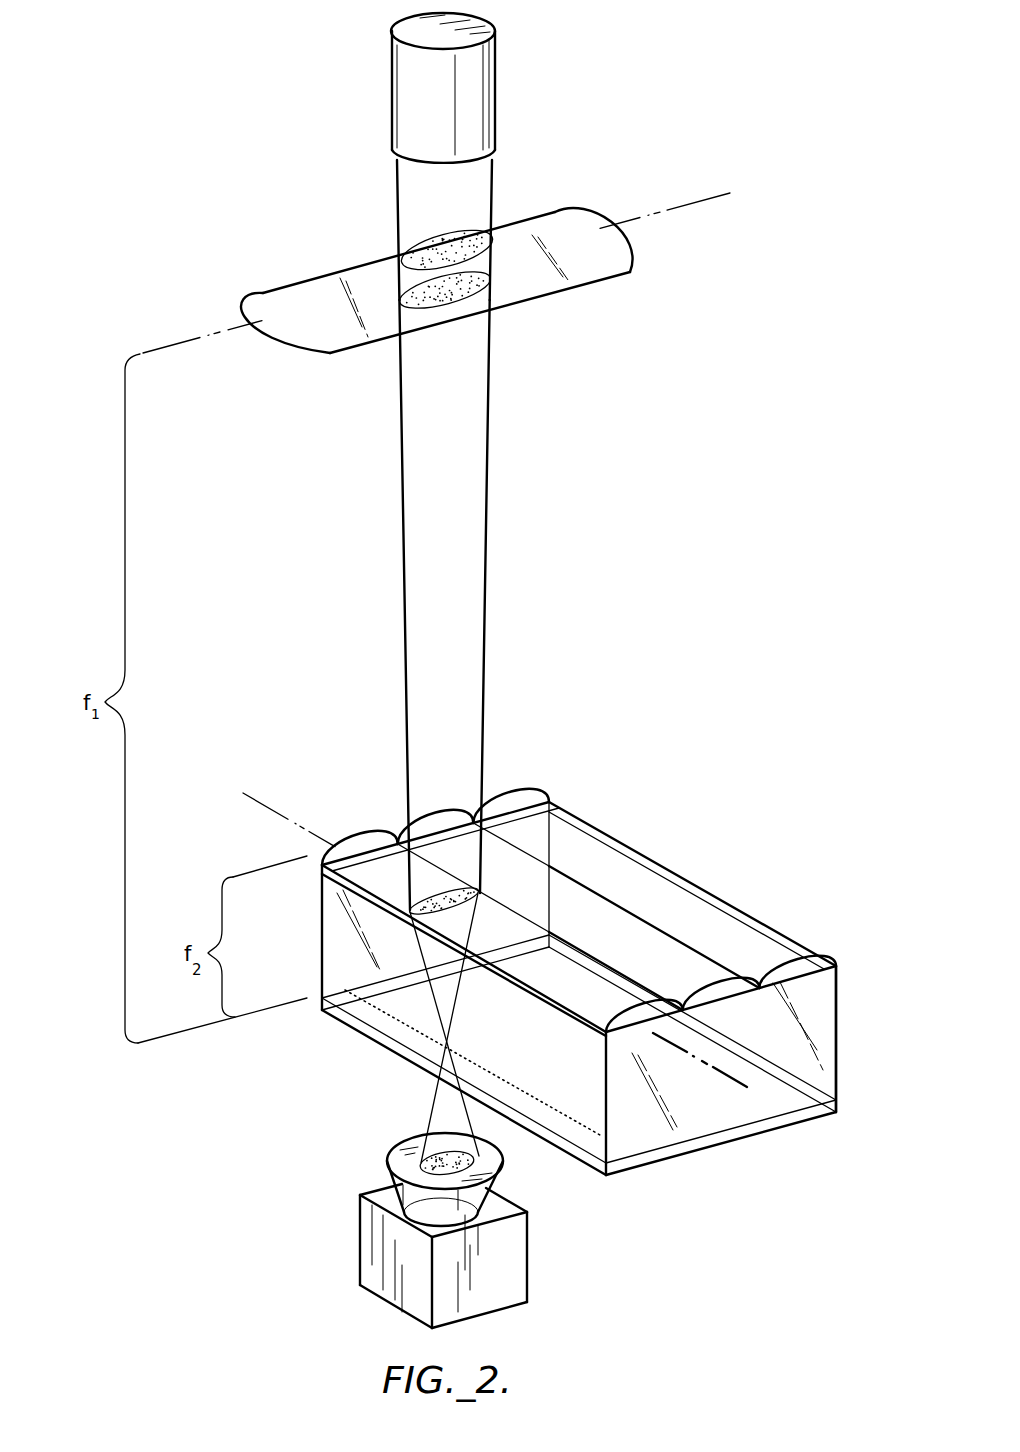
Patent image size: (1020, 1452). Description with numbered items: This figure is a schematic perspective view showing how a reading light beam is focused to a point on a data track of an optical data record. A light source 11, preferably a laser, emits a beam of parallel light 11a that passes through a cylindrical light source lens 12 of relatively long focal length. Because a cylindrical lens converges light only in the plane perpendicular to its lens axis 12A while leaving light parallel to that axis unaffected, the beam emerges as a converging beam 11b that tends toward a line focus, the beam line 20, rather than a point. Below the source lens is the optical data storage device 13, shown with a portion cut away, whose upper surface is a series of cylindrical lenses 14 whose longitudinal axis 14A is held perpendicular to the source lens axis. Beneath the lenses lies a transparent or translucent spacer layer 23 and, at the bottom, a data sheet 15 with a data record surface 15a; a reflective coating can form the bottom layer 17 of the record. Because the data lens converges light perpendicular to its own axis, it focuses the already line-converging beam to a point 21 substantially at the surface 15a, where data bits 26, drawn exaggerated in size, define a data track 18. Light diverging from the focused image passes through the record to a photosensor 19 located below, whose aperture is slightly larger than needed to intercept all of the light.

The light source 11 is at (478, 104).
The parallel light beam 11a is at (484, 188).
The converging beam 11b is at (465, 472).
The cylindrical light source lens 12 is at (606, 266).
The lens axis 12A is at (704, 204).
The optical data storage device 13 is at (841, 1028).
The cylindrical lenses 14 is at (807, 970).
The longitudinal axis of data lens 14A is at (272, 806).
The data sheet 15 is at (787, 1118).
The data record surface 15a is at (710, 1122).
The bottom layer 17 is at (643, 1167).
The data track 18 is at (587, 1131).
The photosensor 19 is at (512, 1253).
The beam line 20 is at (465, 884).
The focused point 21 is at (450, 1042).
The spacer layer 23 is at (830, 1061).
The data bits 26 is at (540, 1093).